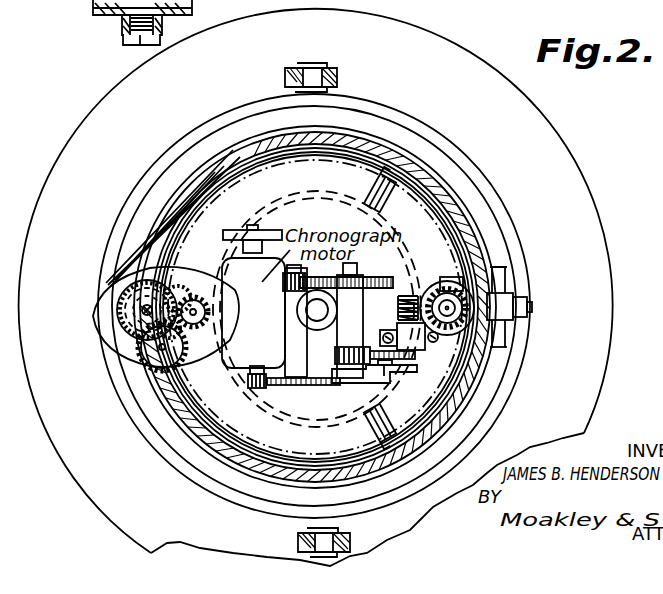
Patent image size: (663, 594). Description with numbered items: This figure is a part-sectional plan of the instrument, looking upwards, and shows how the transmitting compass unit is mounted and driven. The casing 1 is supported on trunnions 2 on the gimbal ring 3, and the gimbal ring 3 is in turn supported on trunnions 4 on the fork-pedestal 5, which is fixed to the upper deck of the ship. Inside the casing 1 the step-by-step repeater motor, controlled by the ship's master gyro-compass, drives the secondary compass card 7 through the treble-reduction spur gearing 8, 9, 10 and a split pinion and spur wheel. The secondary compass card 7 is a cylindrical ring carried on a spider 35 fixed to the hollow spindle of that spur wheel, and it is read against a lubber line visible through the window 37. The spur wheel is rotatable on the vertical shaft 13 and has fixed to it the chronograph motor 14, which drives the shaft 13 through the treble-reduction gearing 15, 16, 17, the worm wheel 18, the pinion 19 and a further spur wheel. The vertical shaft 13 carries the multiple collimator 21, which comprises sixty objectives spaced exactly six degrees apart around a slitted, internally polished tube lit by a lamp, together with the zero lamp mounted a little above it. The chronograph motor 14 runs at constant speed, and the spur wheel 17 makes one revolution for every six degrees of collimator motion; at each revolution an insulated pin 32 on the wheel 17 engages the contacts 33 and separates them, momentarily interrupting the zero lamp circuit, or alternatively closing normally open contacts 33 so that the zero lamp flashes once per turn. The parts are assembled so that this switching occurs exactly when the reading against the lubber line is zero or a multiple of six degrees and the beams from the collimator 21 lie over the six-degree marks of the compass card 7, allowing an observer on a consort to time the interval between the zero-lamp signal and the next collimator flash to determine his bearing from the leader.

The multiple collimator 21 is at (413, 36).
The gimbal ring 3 is at (250, 104).
The fork-pedestal 5 is at (283, 77).
The trunnions 4 is at (340, 78).
The secondary compass card 7 is at (250, 162).
The casing 1 is at (385, 153).
The spider 35 is at (400, 178).
The treble-reduction spur gearing 9 is at (197, 279).
The treble-reduction spur gearing 10 is at (140, 283).
The vertical shaft 13 is at (314, 311).
The treble-reduction spur gearing 8 is at (240, 350).
The chronograph motor 14 is at (222, 360).
The treble-reduction gearing 15 is at (265, 386).
The insulated pin 32 is at (375, 371).
The contacts 33 is at (345, 381).
The treble-reduction gearing 16 is at (455, 280).
The pinion 19 is at (455, 268).
The worm wheel 18 is at (462, 290).
The trunnions 2 is at (530, 306).
The spur wheel 17 is at (478, 345).
The window 37 is at (500, 342).